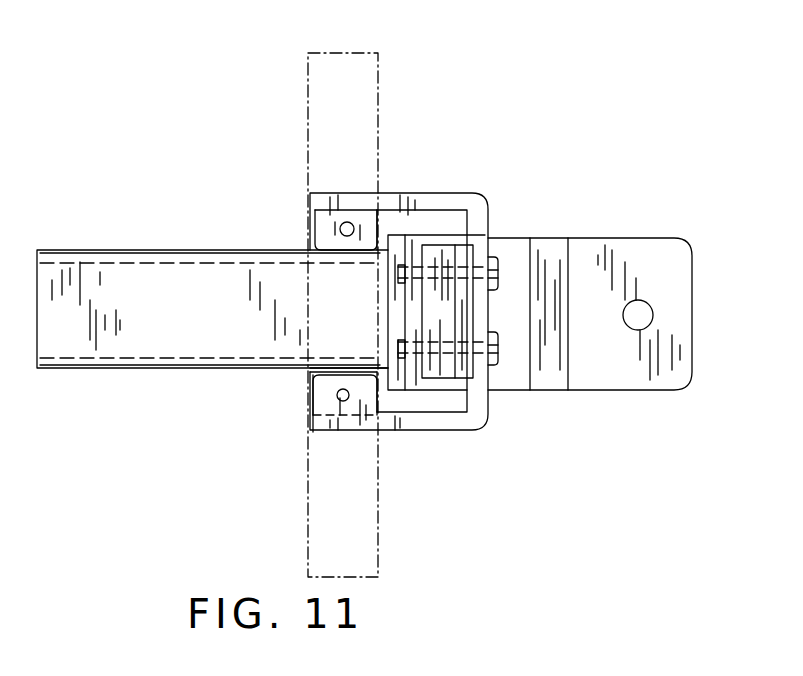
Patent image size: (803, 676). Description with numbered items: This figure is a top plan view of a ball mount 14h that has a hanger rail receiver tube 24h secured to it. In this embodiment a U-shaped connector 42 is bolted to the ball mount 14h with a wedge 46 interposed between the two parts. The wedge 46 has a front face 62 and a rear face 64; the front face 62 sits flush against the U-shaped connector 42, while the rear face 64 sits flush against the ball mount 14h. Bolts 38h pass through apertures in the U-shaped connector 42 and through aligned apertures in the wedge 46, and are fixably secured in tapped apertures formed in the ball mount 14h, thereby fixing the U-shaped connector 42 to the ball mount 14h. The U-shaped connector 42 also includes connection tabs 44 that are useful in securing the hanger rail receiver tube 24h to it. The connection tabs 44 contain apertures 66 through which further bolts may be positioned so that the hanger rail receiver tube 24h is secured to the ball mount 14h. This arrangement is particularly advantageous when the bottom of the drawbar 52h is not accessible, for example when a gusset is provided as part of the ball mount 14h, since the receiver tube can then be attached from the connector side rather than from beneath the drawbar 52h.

The ball mount 14h is at (548, 205).
The hanger rail receiver tube 24h is at (382, 100).
The bolts 38h is at (498, 276).
The U-shaped connector 42 is at (443, 197).
The connection tabs 44 is at (325, 232).
The wedge 46 is at (455, 250).
The drawbar 52h is at (107, 265).
The front face 62 is at (455, 323).
The rear face 64 is at (432, 323).
The apertures 66 is at (350, 227).